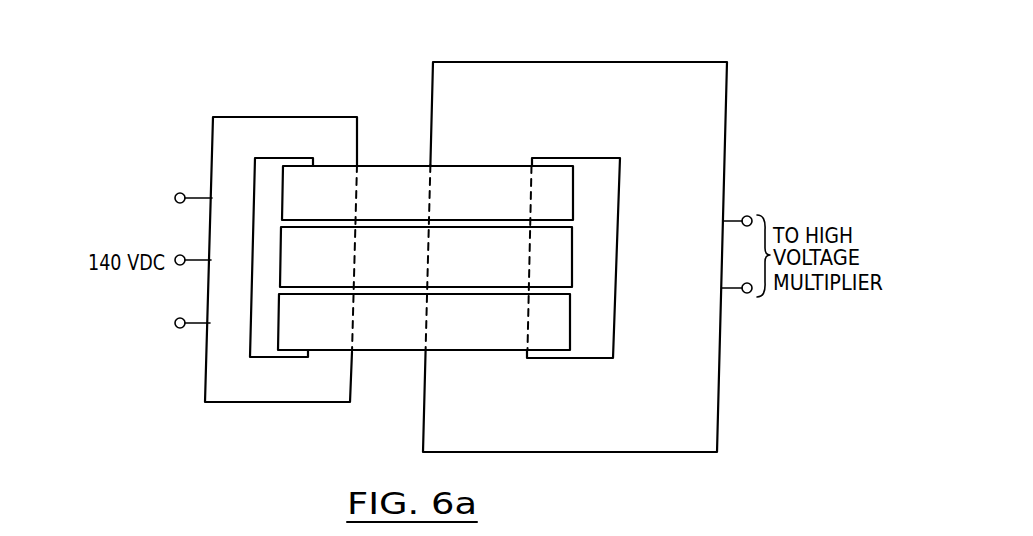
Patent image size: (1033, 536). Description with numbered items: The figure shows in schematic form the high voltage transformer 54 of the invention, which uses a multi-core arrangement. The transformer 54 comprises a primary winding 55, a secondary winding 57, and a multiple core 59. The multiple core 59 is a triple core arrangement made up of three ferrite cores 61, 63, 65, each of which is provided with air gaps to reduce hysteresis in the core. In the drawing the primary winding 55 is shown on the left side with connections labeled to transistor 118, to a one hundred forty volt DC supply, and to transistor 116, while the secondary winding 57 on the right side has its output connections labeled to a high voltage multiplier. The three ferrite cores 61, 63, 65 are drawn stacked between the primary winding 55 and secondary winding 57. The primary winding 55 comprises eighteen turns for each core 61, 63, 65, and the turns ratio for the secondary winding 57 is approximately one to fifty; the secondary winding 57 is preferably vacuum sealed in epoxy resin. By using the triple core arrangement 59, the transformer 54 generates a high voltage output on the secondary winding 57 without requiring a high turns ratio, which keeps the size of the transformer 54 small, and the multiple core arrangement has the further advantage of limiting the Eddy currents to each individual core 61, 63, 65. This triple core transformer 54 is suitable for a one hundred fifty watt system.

The high voltage transformer 54 is at (383, 78).
The primary winding 55 is at (284, 117).
The secondary winding 57 is at (577, 62).
The multiple core 59 is at (393, 360).
The ferrite core 61 is at (478, 178).
The ferrite core 63 is at (488, 273).
The ferrite core 65 is at (477, 333).
The transistor 116 is at (121, 325).
The transistor 118 is at (124, 200).